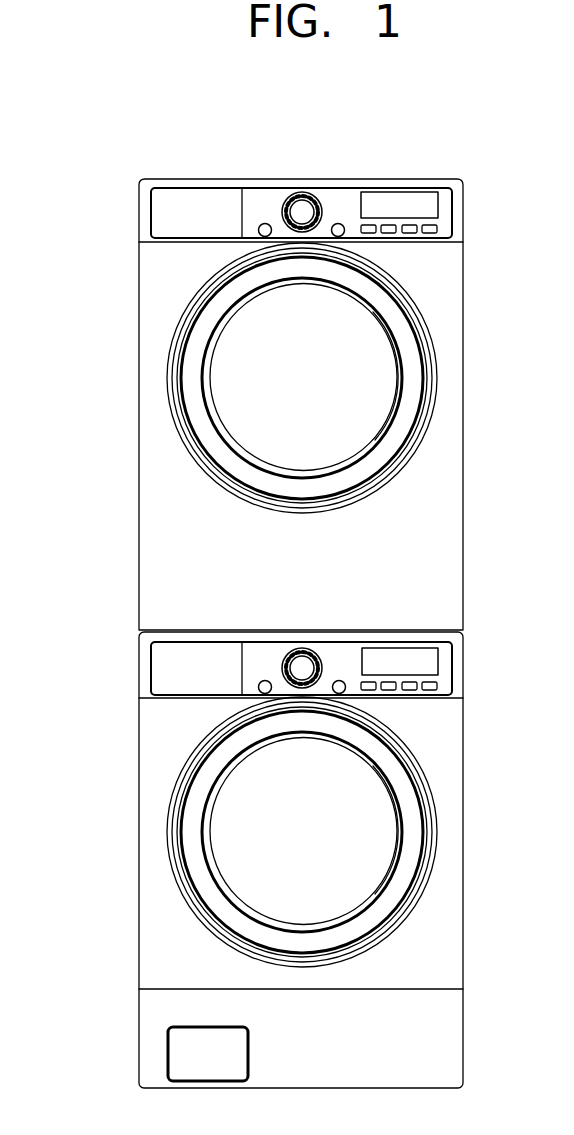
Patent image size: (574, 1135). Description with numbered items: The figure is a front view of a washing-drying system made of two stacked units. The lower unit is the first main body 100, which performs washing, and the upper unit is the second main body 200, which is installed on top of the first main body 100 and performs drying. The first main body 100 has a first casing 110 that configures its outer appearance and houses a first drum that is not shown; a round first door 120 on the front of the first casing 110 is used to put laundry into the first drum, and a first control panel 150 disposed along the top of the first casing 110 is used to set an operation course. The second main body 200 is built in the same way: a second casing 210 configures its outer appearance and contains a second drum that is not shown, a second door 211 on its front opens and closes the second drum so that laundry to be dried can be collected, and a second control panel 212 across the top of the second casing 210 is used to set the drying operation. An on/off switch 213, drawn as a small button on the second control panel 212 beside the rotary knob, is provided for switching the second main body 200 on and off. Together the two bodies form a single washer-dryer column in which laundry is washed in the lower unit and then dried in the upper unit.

The first main body 100 is at (118, 933).
The first casing 110 is at (143, 743).
The first door 120 is at (187, 839).
The first control panel 150 is at (330, 650).
The second main body 200 is at (118, 484).
The second casing 210 is at (143, 291).
The second door 211 is at (187, 388).
The second control panel 212 is at (336, 195).
The on/off switch 213 is at (265, 223).